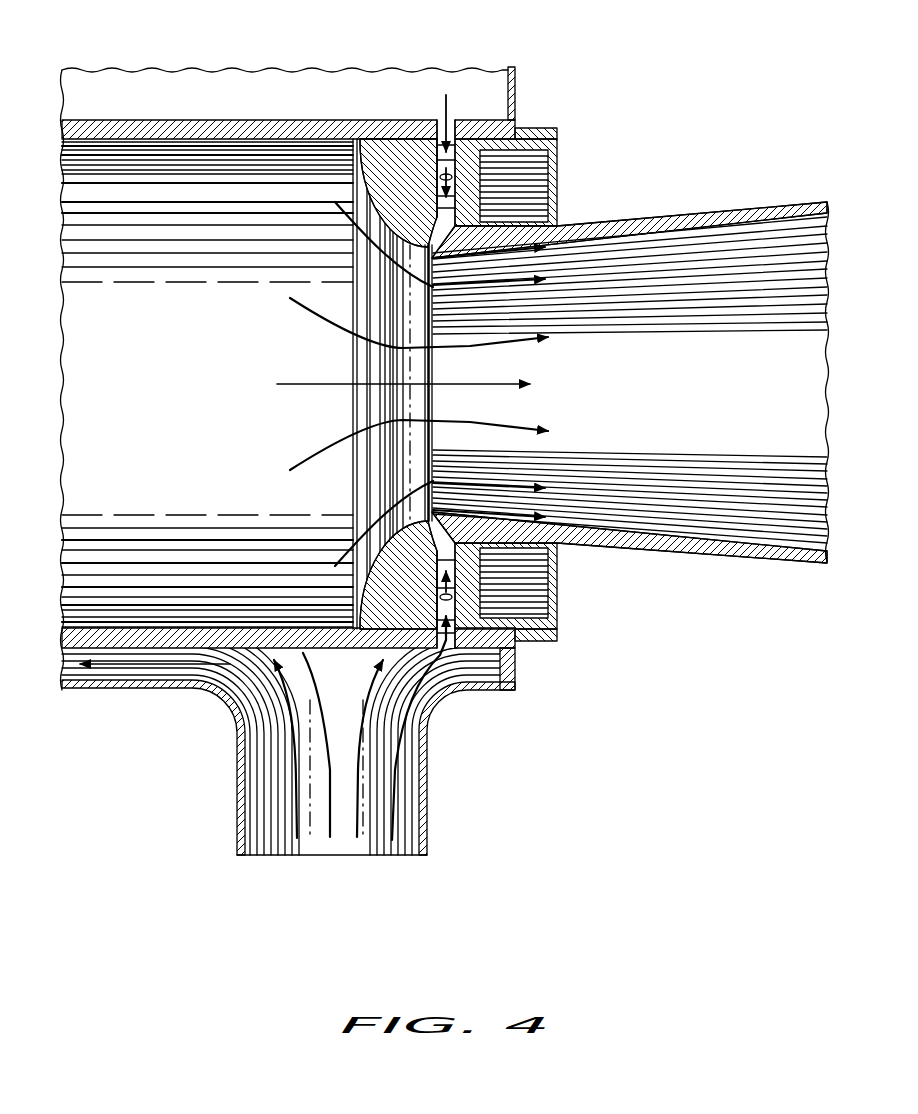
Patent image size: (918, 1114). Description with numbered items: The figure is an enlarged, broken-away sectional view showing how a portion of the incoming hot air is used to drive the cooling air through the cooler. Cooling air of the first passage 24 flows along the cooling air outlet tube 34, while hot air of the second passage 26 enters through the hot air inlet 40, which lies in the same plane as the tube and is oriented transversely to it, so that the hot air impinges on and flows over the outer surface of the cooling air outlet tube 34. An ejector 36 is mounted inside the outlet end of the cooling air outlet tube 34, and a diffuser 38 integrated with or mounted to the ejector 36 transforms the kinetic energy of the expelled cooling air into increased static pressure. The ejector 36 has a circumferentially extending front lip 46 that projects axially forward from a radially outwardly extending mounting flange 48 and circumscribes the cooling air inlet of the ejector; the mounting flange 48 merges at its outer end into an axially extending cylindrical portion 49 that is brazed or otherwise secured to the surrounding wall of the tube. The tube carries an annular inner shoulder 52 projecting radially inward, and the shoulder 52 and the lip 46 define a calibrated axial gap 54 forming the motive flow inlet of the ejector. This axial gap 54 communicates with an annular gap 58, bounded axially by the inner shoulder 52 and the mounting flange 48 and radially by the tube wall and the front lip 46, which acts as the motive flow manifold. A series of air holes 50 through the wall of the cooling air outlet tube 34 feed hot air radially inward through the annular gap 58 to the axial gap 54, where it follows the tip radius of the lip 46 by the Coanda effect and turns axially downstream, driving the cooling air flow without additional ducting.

The first passage 24 is at (470, 424).
The second passage 26 is at (327, 823).
The cooling air outlet tube 34 is at (122, 587).
The ejector 36 is at (460, 403).
The diffuser 38 is at (778, 443).
The hot air inlet 40 is at (378, 828).
The front lip 46 is at (437, 258).
The mounting flange 48 is at (467, 613).
The cylindrical portion 49 is at (557, 618).
The air holes 50 is at (449, 172).
The inner shoulder 52 is at (427, 245).
The axial gap 54 is at (433, 247).
The annular gap 58 is at (495, 545).